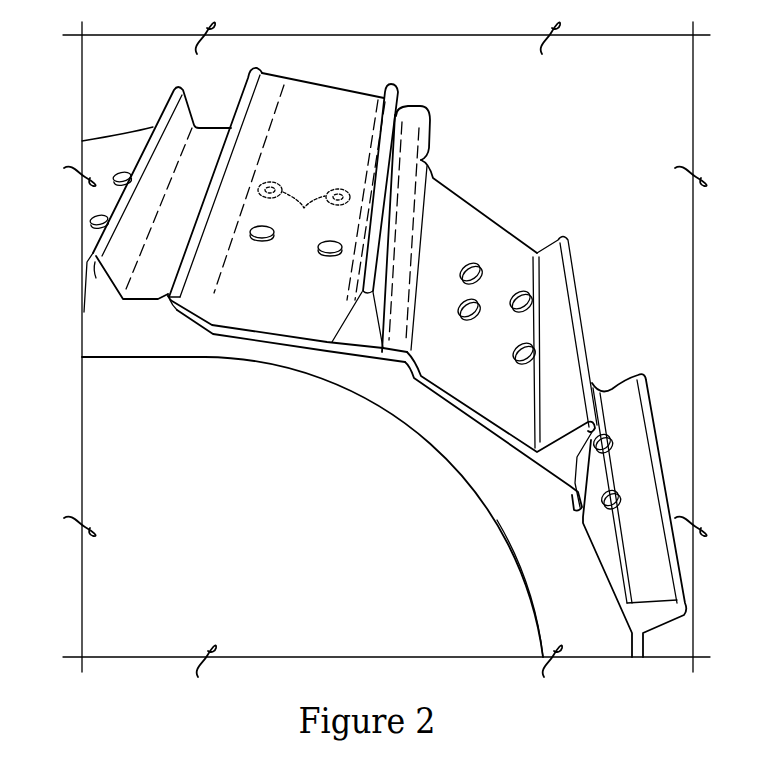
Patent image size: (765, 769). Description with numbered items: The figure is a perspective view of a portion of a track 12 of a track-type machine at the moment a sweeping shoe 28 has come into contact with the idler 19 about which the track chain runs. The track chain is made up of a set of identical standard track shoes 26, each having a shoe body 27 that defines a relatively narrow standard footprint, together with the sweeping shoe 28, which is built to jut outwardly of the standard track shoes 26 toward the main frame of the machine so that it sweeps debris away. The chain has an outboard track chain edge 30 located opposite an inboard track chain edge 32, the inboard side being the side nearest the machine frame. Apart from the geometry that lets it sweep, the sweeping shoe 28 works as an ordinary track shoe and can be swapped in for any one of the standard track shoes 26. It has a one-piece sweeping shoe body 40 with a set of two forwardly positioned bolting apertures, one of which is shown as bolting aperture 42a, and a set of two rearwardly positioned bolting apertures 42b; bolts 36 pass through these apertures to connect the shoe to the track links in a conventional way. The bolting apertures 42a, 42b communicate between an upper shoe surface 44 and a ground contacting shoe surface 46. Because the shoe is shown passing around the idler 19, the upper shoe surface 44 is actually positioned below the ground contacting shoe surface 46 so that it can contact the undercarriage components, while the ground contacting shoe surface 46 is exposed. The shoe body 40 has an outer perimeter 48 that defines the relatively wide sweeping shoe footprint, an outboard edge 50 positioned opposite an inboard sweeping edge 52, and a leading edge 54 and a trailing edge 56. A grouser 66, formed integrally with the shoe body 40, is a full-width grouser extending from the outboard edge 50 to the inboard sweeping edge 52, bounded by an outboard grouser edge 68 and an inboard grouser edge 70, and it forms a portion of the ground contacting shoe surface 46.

The track 12 is at (607, 326).
The idler 19 is at (500, 638).
The standard track shoes 26 is at (124, 310).
The shoe body 27 is at (87, 280).
The sweeping track shoe 28 is at (273, 351).
The outboard track chain edge 30 is at (453, 407).
The inboard track chain edge 32 is at (211, 121).
The bolts 36 is at (303, 208).
The sweeping shoe body 40 is at (425, 148).
The forwardly positioned bolting aperture 42a is at (338, 189).
The rearwardly positioned bolting apertures 42b is at (270, 181).
The upper shoe surface 44 is at (333, 357).
The ground contacting shoe surface 46 is at (309, 318).
The outer perimeter 48 is at (181, 298).
The outboard edge 50 is at (211, 330).
The inboard sweeping edge 52 is at (338, 87).
The leading edge 54 is at (432, 134).
The trailing edge 56 is at (240, 96).
The grouser 66 is at (396, 114).
The outboard grouser edge 68 is at (374, 293).
The inboard grouser edge 70 is at (395, 85).